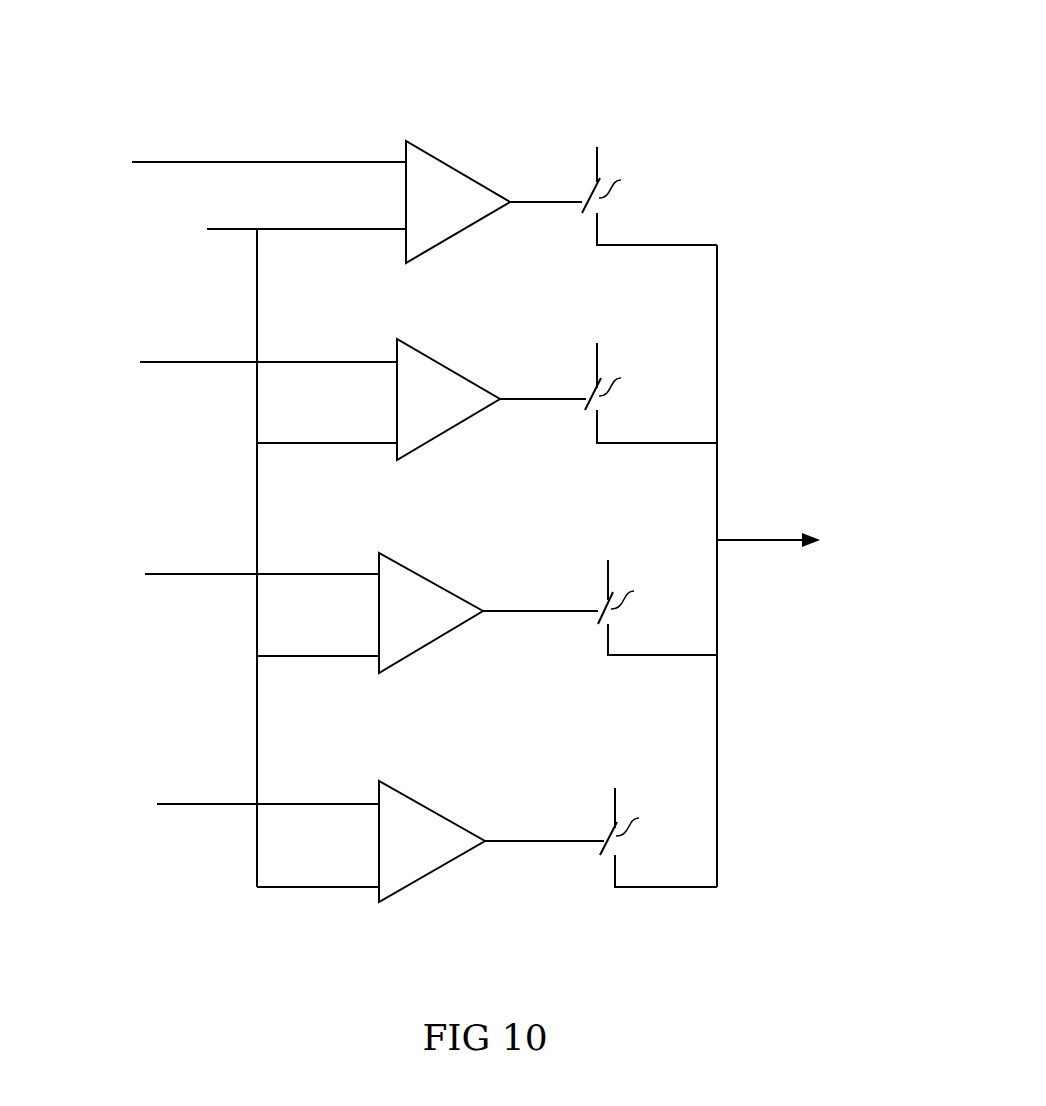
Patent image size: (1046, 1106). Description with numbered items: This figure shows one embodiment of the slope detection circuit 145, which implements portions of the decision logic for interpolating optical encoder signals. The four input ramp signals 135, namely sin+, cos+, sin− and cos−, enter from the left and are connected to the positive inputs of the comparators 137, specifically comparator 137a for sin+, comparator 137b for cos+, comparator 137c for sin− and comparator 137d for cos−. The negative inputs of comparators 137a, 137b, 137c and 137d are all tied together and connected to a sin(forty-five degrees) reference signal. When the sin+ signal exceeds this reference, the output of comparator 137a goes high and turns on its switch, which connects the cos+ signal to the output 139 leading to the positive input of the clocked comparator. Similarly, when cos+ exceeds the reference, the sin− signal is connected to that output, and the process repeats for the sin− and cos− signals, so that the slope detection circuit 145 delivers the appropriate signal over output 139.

The input signals 135 is at (63, 131).
The comparators 137 is at (390, 105).
The comparator 137a is at (456, 232).
The comparator 137b is at (448, 428).
The comparator 137c is at (436, 641).
The comparator 137d is at (437, 870).
The output to positive input of clocked compensator 139 is at (730, 540).
The slope detection circuit 145 is at (706, 112).